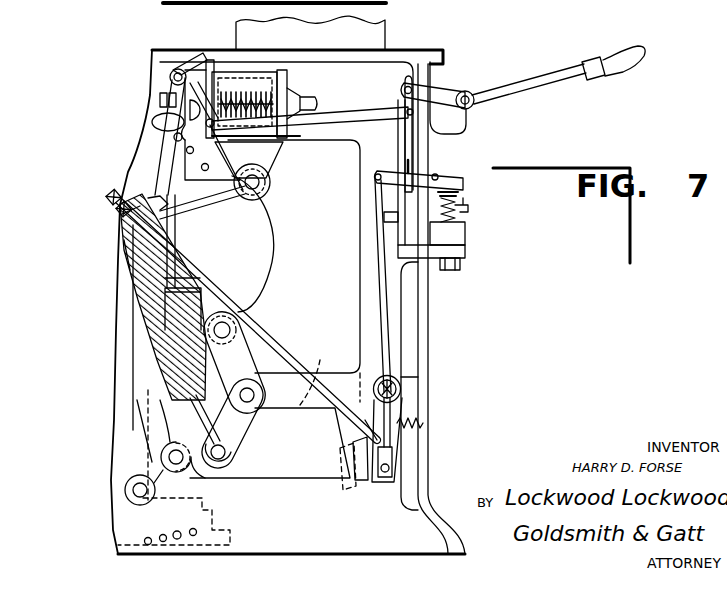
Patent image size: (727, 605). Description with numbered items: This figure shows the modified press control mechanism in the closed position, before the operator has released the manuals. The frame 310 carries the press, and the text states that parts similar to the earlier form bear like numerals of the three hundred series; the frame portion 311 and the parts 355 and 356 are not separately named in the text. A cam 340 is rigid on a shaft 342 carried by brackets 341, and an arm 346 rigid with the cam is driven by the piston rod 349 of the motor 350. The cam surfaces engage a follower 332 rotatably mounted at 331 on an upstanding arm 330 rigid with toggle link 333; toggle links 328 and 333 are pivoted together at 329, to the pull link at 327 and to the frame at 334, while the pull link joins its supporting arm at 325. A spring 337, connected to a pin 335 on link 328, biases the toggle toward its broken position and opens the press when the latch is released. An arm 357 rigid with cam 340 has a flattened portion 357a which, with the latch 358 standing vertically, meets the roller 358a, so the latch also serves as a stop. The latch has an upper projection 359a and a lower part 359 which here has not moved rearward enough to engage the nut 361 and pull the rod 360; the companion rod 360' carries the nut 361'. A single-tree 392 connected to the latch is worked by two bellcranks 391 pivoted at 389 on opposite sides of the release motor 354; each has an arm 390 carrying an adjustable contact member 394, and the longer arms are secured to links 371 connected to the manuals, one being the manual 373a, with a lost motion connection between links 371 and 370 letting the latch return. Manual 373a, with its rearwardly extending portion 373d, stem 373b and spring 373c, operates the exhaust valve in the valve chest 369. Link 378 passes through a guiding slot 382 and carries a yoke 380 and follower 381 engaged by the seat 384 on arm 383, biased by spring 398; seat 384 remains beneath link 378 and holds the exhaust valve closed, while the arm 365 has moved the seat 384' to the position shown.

The frame 310 is at (424, 334).
The frame top block 311 is at (380, 40).
The pivot 325 is at (140, 500).
The pivot 327 is at (180, 450).
The pivot 328 is at (240, 428).
The pivot 329 is at (258, 395).
The link 330 is at (238, 362).
The spring stem 331 is at (210, 327).
The pivot 332 is at (248, 328).
The link 333 is at (292, 406).
The frame web 334 is at (416, 382).
The hook 335 is at (226, 457).
The spring 337 is at (142, 327).
The cam 340 is at (264, 258).
The bracket 341 is at (278, 148).
The pivot pin 342 is at (263, 187).
The strap 346 is at (158, 130).
The spring end 349 is at (125, 277).
The motor 350 is at (155, 395).
The release motor 354 is at (268, 73).
The clip 355 is at (188, 112).
The plunger 356 is at (306, 96).
The arm 357 is at (271, 170).
The flattened portion 357a is at (167, 172).
The latch 358 is at (158, 100).
The roller 358a is at (108, 197).
The part 359 is at (125, 244).
The lever tip 359a is at (185, 62).
The rod 360 is at (248, 320).
The rod 360' is at (320, 394).
The nut 361 is at (89, 224).
The clamp 361' is at (90, 213).
The arm 365 is at (212, 228).
The bracket 369 is at (467, 233).
The link 370 is at (446, 172).
The links 371 is at (404, 137).
The manual 373a is at (562, 74).
The washer 373b is at (458, 192).
The spring 373c is at (470, 221).
The lever 373d is at (450, 88).
The link 378 is at (397, 317).
The link 380 is at (398, 462).
The block 381 is at (396, 472).
The pivot 382 is at (401, 390).
The rod end 383 is at (378, 416).
The seat 384 is at (372, 475).
The seat 384' is at (334, 486).
The pivot 389 is at (204, 126).
The arm 390 is at (225, 102).
The bellcrank 391 is at (352, 117).
The single-tree 392 is at (174, 83).
The adjustable contact member 394 is at (211, 60).
The spring 398 is at (423, 423).